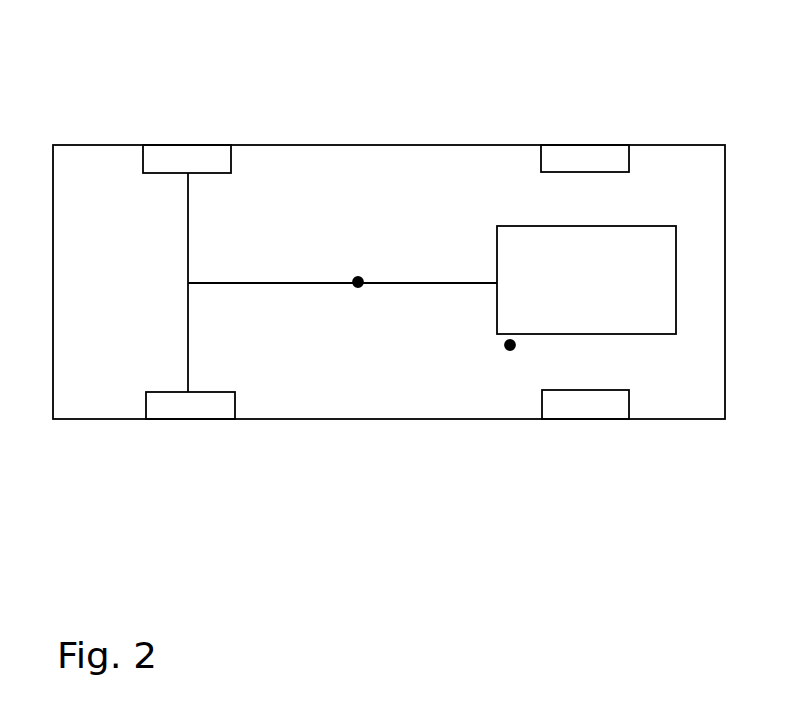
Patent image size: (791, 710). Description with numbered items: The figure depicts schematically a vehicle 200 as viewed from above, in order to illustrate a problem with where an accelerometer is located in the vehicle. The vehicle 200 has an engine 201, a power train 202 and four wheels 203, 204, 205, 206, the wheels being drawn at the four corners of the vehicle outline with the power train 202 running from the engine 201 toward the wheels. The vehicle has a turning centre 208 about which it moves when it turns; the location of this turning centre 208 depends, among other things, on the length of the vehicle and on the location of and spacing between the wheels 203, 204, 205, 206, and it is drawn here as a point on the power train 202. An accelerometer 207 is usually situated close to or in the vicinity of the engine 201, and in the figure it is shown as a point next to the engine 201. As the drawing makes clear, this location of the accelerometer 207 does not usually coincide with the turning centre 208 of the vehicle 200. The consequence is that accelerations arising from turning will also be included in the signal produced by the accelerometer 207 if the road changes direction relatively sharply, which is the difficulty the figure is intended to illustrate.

The vehicle 200 is at (413, 180).
The engine 201 is at (586, 280).
The power train 202 is at (277, 283).
The wheel 203 is at (191, 405).
The wheel 204 is at (187, 161).
The wheel 205 is at (590, 158).
The wheel 206 is at (587, 407).
The accelerometer 207 is at (512, 349).
The turning centre 208 is at (358, 284).